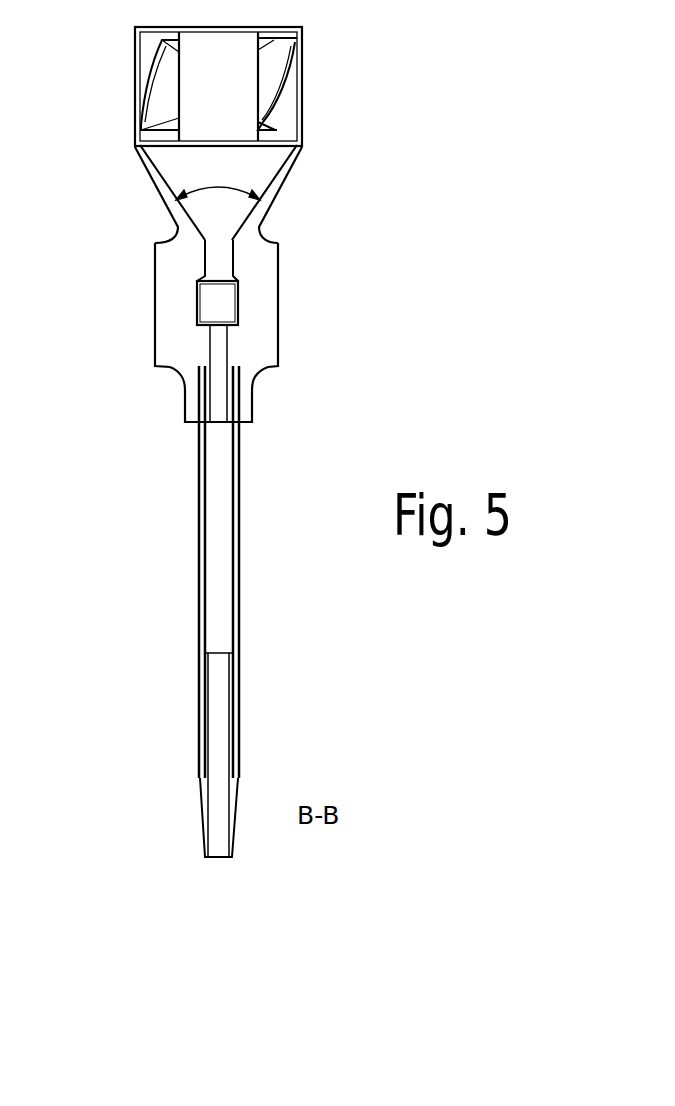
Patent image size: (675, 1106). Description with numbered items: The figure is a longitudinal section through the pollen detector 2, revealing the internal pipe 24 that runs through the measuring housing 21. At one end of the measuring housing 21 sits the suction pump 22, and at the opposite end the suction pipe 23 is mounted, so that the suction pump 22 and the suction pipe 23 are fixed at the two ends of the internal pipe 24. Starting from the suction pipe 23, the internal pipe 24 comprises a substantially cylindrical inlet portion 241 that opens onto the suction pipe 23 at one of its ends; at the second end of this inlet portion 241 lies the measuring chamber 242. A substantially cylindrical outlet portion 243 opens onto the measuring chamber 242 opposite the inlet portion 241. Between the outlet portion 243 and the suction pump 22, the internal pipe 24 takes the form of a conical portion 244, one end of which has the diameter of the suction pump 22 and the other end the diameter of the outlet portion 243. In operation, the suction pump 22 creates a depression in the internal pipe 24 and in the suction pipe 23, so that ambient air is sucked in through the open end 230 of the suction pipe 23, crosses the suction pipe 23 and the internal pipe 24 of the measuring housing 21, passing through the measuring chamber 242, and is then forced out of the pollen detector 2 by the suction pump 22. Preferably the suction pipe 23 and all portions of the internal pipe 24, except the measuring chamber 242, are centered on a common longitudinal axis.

The pollen detector 2 is at (116, 469).
The suction pump 22 is at (272, 100).
The conical portion 244 is at (173, 162).
The measuring housing 21 is at (277, 253).
The internal pipe 24 is at (178, 373).
The outlet portion 243 is at (217, 262).
The measuring chamber 242 is at (235, 300).
The inlet portion 241 is at (217, 340).
The suction pipe 23 is at (216, 633).
The open end 230 is at (220, 860).